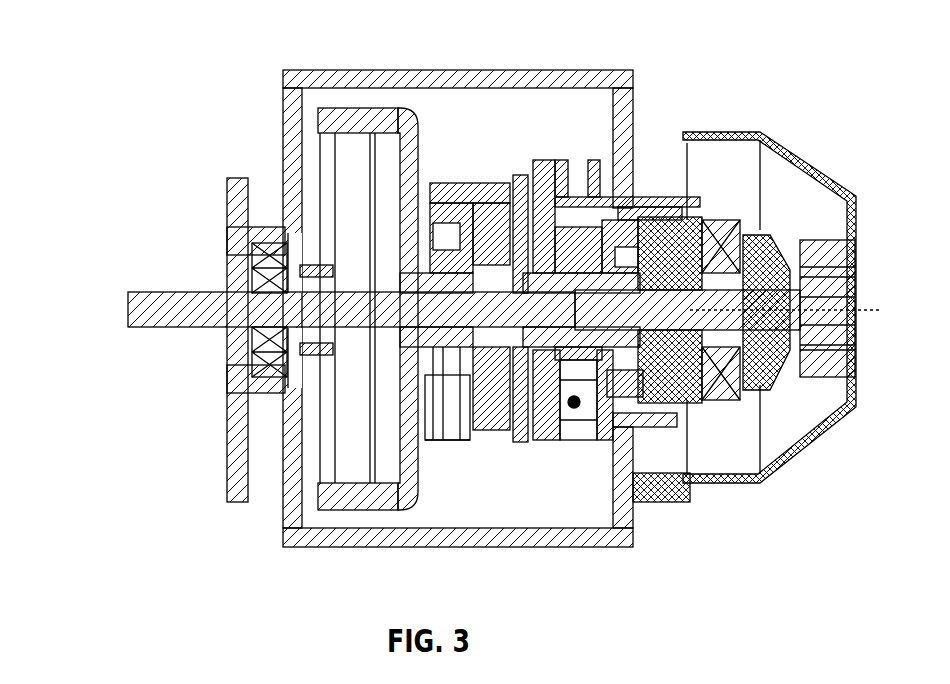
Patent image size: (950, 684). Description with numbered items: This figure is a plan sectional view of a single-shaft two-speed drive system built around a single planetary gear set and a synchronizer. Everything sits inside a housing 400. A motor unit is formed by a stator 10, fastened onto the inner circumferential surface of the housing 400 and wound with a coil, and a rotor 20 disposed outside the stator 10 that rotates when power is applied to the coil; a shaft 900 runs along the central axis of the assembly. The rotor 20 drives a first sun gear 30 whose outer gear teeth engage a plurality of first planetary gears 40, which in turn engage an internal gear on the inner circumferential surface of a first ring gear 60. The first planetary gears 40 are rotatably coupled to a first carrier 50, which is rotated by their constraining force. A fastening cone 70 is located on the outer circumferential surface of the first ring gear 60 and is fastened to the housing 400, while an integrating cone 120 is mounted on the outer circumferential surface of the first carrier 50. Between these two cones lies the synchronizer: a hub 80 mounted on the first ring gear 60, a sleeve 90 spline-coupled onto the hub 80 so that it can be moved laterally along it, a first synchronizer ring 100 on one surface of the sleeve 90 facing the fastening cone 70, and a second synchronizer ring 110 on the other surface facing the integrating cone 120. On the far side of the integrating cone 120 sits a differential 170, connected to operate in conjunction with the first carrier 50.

The housing 400 is at (300, 102).
The stator 10 is at (353, 443).
The rotor 20 is at (400, 483).
The shaft 900 is at (130, 320).
The first sun gear 30 is at (443, 275).
The first ring gear 60 is at (500, 193).
The fastening cone 70 is at (533, 203).
The sleeve 90 is at (577, 177).
The hub 80 is at (563, 237).
The integrating cone 120 is at (617, 212).
The first planetary gears 40 is at (443, 395).
The first carrier 50 is at (470, 400).
The first synchronizer ring 100 is at (553, 410).
The second synchronizer ring 110 is at (603, 423).
The differential 170 is at (743, 377).